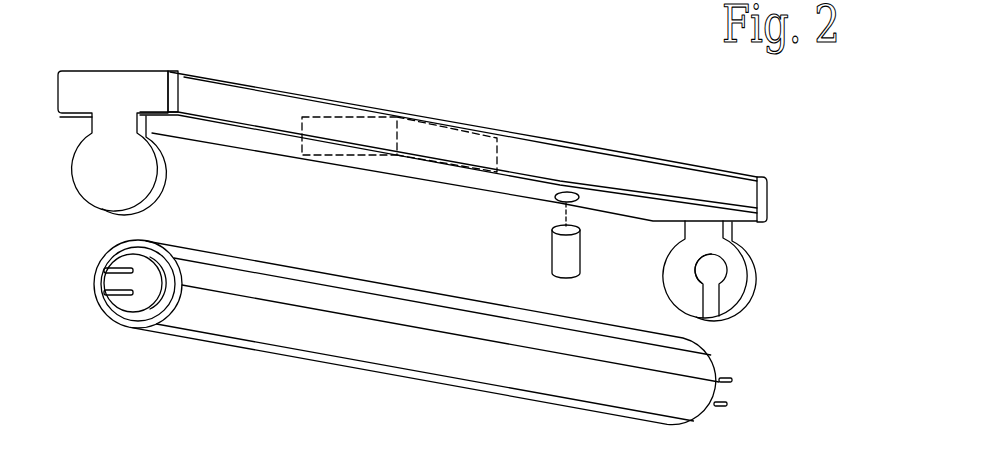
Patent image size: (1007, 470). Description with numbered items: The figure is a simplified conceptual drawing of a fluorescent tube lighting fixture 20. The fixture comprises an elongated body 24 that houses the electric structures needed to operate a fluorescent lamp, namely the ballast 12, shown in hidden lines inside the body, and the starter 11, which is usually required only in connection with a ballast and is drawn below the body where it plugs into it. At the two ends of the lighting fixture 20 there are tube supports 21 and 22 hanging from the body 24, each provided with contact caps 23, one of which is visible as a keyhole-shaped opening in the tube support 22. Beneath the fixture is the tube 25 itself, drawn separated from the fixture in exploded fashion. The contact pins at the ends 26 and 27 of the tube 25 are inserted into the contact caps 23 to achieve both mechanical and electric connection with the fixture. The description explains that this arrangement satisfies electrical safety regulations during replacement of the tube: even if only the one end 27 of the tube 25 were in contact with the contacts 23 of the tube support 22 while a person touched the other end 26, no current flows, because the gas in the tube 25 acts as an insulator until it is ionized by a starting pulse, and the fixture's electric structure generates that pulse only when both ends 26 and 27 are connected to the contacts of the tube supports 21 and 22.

The fluorescent tube lighting fixture 20 is at (453, 133).
The body 24 is at (252, 84).
The ballast 12 is at (350, 117).
The starter 11 is at (552, 250).
The tube support 21 is at (102, 187).
The tube support 22 is at (752, 247).
The contact caps 23 is at (720, 278).
The tube 25 is at (409, 355).
The end of tube 26 is at (95, 328).
The end of tube 27 is at (725, 420).